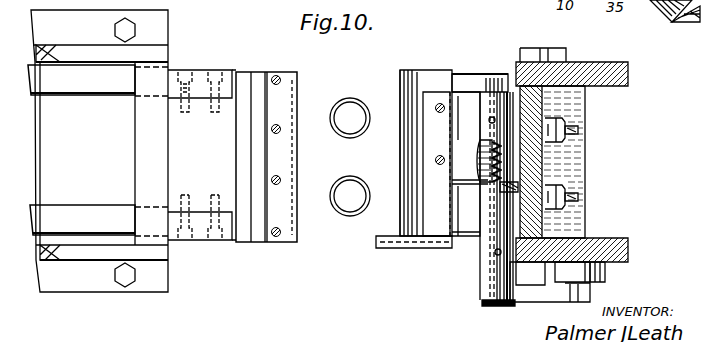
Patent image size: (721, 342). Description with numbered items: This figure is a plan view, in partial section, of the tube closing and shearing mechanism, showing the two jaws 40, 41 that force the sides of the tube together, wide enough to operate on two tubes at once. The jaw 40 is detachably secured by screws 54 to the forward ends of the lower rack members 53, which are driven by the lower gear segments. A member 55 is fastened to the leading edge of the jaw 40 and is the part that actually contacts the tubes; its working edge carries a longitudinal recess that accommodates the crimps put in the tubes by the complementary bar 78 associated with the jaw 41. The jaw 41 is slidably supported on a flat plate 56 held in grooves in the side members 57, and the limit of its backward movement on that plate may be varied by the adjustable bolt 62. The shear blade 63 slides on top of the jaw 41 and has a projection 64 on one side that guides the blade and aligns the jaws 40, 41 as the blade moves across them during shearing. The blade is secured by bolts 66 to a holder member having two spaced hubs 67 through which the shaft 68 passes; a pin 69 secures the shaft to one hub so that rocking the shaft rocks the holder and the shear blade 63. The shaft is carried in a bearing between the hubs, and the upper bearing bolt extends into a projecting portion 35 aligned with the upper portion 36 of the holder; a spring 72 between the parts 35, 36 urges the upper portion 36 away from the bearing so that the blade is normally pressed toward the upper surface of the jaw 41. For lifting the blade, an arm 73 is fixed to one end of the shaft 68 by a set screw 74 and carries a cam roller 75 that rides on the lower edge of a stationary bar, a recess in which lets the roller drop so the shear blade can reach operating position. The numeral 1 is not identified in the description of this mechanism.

The ring 1 is at (352, 139).
The projecting portion 35 is at (520, 186).
The upper portion of the plate holder 36 is at (478, 170).
The jaw 40 is at (262, 244).
The jaw 41 is at (406, 70).
The lower rack members 53 is at (83, 218).
The screws 54 is at (221, 65).
The member 55 is at (298, 157).
The flat plate 56 is at (585, 217).
The side members 57 is at (596, 63).
The adjustable bolt 62 is at (578, 134).
The shear blade 63 is at (419, 71).
The projection 64 is at (384, 249).
The bolts 66 is at (435, 160).
The hubs 67 is at (478, 132).
The shaft 68 is at (498, 307).
The pin 69 is at (490, 123).
The spring 72 is at (480, 178).
The arm 73 is at (546, 302).
The set screw 74 is at (495, 255).
The cam roller 75 is at (606, 272).
The complementary bar 78 is at (399, 94).